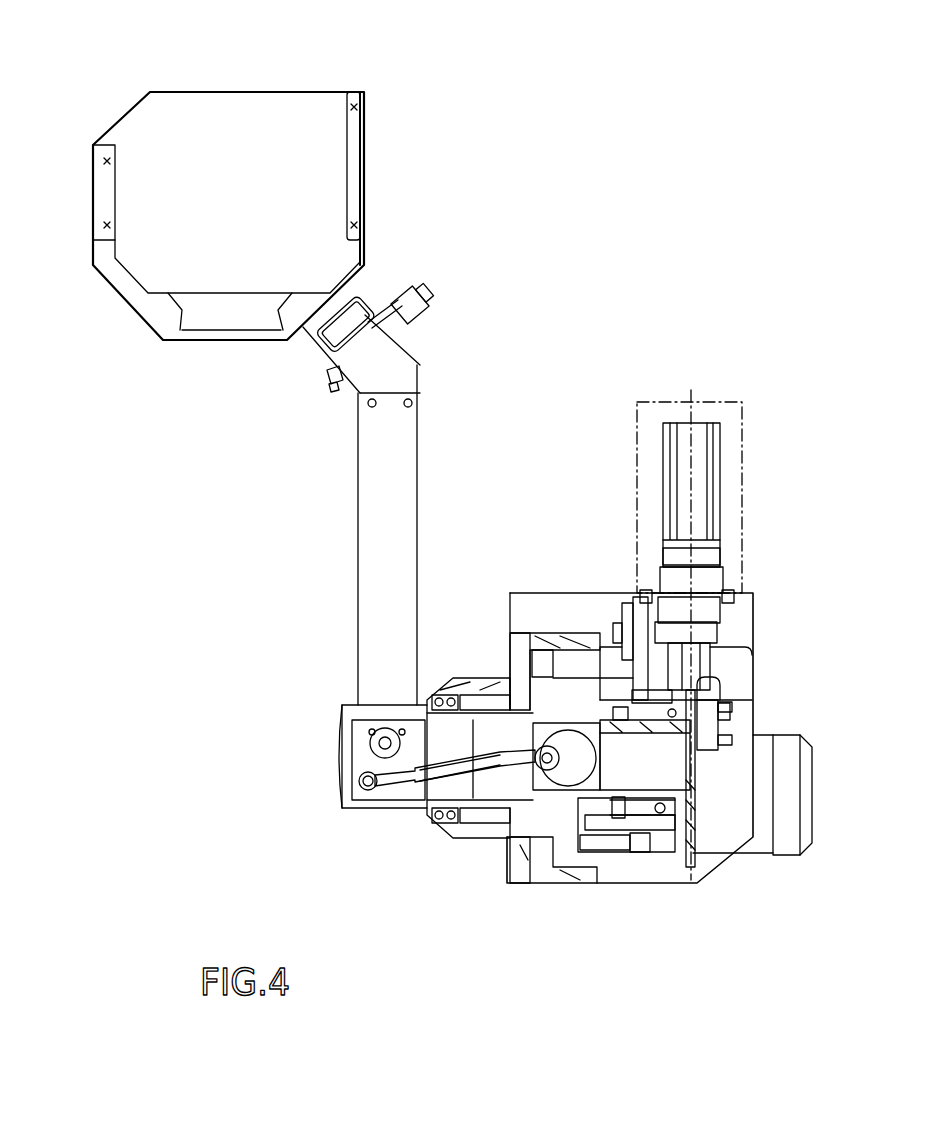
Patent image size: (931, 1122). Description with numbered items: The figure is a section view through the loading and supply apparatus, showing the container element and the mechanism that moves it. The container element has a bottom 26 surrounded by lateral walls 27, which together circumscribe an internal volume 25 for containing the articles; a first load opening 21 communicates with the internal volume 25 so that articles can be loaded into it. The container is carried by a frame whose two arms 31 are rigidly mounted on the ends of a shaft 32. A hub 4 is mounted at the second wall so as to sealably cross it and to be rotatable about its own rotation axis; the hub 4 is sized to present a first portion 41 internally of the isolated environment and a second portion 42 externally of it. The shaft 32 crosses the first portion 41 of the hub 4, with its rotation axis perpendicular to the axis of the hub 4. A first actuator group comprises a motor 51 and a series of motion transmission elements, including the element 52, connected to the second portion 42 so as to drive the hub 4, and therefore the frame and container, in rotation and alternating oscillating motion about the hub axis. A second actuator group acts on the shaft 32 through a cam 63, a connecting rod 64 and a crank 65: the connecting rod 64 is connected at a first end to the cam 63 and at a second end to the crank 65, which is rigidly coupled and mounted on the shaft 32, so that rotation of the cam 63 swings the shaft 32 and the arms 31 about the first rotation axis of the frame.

The first load opening 21 is at (212, 224).
The internal volume 25 is at (246, 238).
The bottom 26 is at (222, 342).
The lateral walls 27 is at (95, 198).
The arms 31 is at (375, 550).
The shaft 32 is at (380, 748).
The hub 4 is at (597, 700).
The first portion 41 is at (357, 838).
The second portion 42 is at (602, 852).
The motor 51 is at (715, 468).
The motion transmission element 52 is at (700, 845).
The cam 63 is at (555, 737).
The connecting rod 64 is at (465, 790).
The crank 65 is at (365, 782).